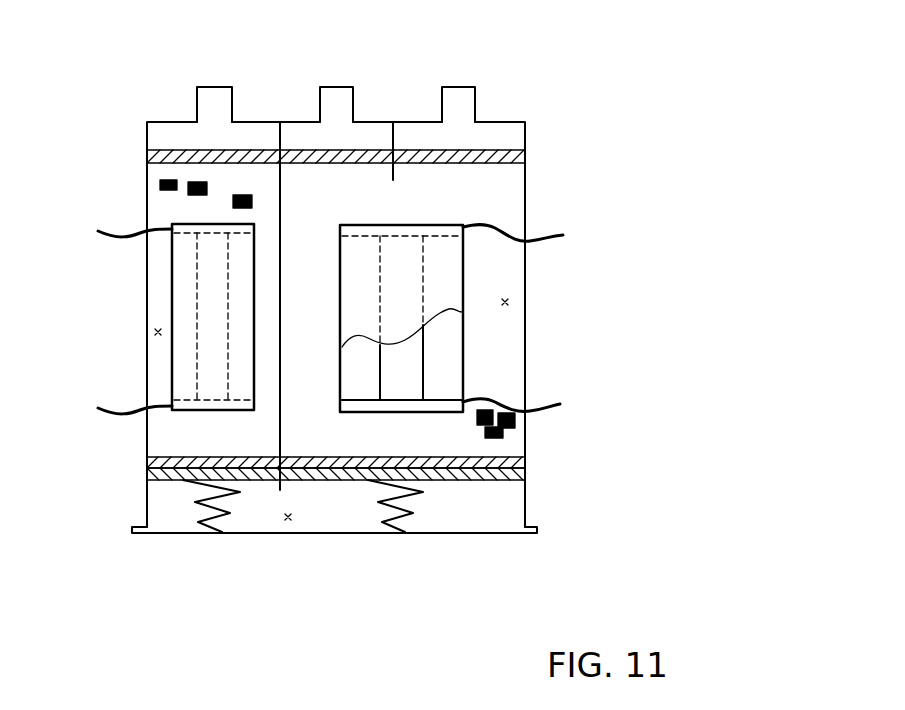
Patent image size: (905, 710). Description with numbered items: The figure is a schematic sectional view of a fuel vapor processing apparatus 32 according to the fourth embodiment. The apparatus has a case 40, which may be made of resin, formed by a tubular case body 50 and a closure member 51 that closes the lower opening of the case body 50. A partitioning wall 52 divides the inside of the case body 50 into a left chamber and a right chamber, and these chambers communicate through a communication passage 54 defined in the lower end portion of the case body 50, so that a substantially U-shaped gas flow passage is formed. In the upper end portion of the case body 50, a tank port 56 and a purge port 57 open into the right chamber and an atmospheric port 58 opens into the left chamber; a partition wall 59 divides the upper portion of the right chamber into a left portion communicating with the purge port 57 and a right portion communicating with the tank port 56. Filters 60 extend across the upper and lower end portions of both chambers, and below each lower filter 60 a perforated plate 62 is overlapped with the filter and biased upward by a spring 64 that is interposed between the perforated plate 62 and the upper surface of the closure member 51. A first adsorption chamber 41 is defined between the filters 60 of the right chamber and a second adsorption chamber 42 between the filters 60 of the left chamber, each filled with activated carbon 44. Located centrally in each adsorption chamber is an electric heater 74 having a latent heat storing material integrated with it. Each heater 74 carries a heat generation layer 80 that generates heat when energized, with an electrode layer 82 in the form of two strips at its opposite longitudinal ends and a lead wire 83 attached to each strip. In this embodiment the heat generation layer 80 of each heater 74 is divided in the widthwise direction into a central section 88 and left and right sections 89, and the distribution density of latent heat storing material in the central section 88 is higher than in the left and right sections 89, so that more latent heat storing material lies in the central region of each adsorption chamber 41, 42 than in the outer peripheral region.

The fuel vapor processing apparatus 32 is at (552, 100).
The case 40 is at (499, 100).
The first adsorption chamber 41 is at (507, 302).
The second adsorption chamber 42 is at (157, 332).
The activated carbon 44 is at (159, 185).
The case body 50 is at (538, 198).
The closure member 51 is at (483, 535).
The partitioning wall 52 is at (280, 410).
The communication passage 54 is at (288, 517).
The tank port 56 is at (460, 87).
The purge port 57 is at (338, 87).
The atmospheric port 58 is at (218, 87).
The partition wall 59 is at (392, 170).
The filters 60 is at (363, 157).
The perforated plate 62 is at (165, 474).
The spring 64 is at (202, 502).
The electric heater 74 is at (163, 303).
The heat generation layer 80 is at (187, 370).
The electrode layer 82 is at (190, 222).
The lead wire 83 is at (107, 235).
The central section 88 is at (414, 363).
The left and right sections 89 is at (453, 382).